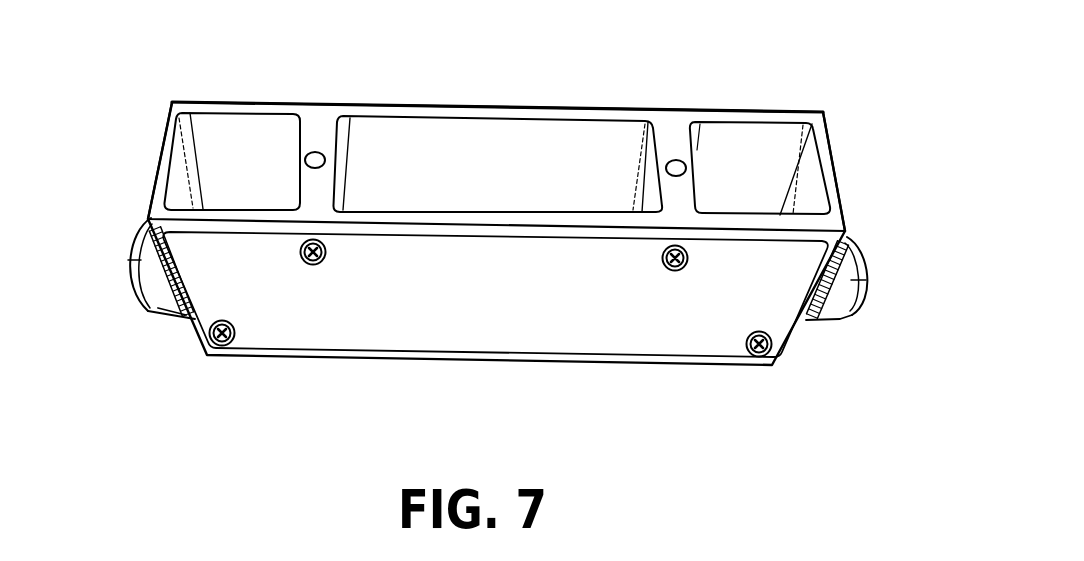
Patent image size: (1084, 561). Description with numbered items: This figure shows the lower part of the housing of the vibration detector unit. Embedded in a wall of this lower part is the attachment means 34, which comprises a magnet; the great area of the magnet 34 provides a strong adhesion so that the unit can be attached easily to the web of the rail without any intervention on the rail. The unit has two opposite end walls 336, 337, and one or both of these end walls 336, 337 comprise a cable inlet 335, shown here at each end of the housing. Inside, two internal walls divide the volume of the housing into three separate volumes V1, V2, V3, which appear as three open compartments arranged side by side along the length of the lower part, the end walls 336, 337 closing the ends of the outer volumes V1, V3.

The first separate volume V1 is at (245, 140).
The second separate volume V2 is at (473, 148).
The third separate volume V3 is at (747, 152).
The end wall 337 is at (163, 160).
The end wall 336 is at (827, 162).
The cable inlet 335 is at (138, 287).
The attachment means 34 is at (320, 318).